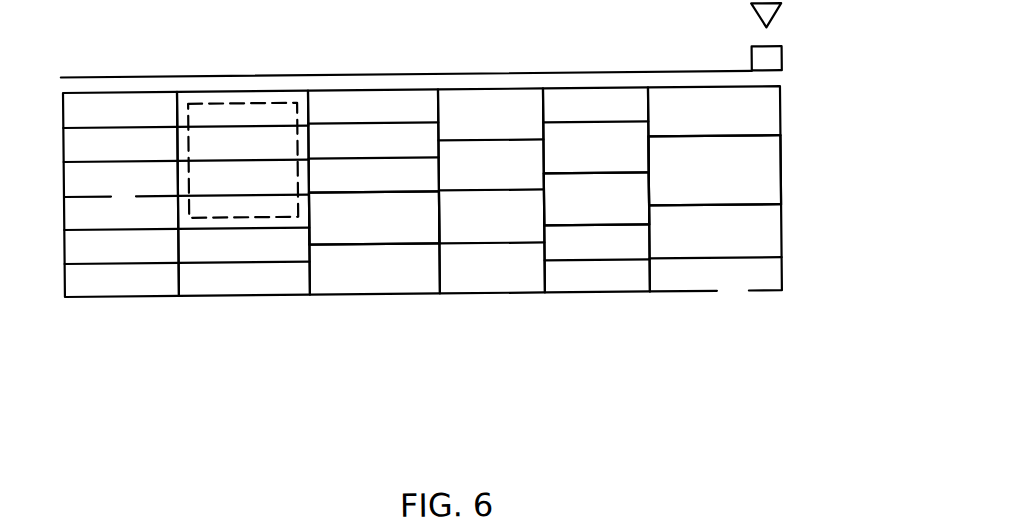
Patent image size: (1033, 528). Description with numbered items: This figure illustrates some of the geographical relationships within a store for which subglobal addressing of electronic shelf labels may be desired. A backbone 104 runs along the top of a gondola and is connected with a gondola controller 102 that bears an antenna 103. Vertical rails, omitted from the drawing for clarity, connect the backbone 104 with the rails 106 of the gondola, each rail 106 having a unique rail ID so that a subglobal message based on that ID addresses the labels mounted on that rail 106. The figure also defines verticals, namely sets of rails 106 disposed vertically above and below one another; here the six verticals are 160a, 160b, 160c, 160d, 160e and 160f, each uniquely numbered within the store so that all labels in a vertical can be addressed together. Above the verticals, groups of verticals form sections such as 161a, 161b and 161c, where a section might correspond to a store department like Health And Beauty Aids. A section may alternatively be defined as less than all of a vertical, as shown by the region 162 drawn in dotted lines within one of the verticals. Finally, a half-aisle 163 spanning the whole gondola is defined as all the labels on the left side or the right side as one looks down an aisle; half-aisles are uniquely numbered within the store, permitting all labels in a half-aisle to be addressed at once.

The gondola controller 102 is at (782, 64).
The antenna 103 is at (782, 17).
The backbone 104 is at (109, 76).
The rail 106 is at (360, 247).
The vertical 160a is at (121, 230).
The vertical 160b is at (244, 229).
The vertical 160c is at (373, 227).
The vertical 160d is at (492, 226).
The vertical 160e is at (597, 225).
The vertical 160f is at (715, 224).
The section 161a is at (186, 396).
The section 161b is at (477, 392).
The section 161c is at (719, 390).
The region 162 is at (245, 102).
The half-aisle 163 is at (423, 448).